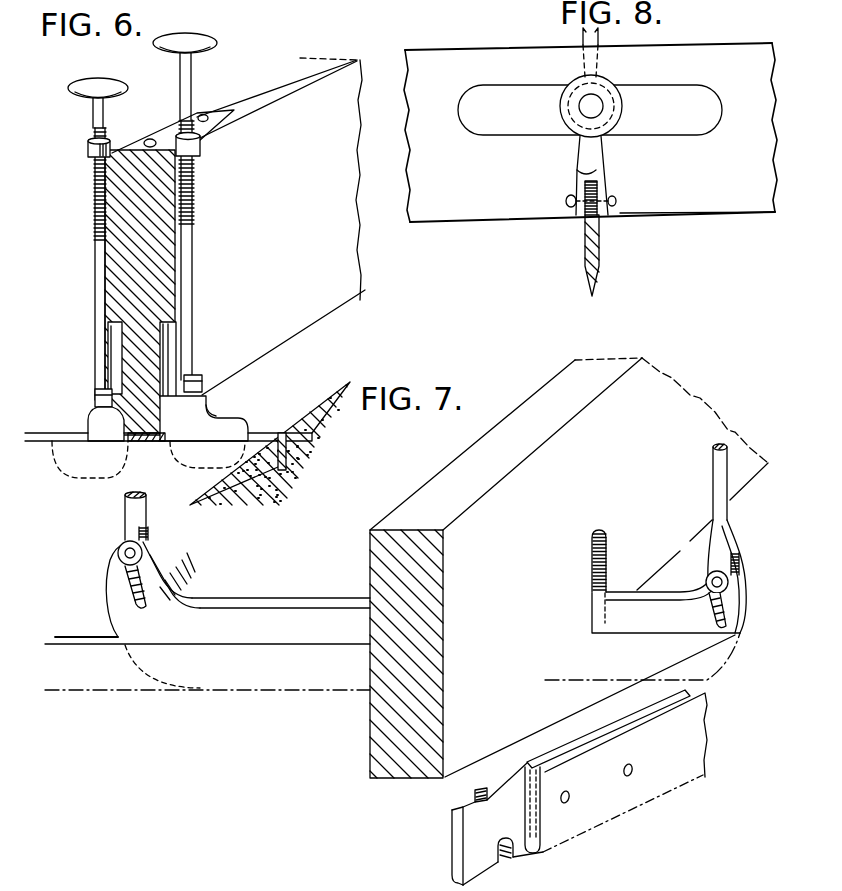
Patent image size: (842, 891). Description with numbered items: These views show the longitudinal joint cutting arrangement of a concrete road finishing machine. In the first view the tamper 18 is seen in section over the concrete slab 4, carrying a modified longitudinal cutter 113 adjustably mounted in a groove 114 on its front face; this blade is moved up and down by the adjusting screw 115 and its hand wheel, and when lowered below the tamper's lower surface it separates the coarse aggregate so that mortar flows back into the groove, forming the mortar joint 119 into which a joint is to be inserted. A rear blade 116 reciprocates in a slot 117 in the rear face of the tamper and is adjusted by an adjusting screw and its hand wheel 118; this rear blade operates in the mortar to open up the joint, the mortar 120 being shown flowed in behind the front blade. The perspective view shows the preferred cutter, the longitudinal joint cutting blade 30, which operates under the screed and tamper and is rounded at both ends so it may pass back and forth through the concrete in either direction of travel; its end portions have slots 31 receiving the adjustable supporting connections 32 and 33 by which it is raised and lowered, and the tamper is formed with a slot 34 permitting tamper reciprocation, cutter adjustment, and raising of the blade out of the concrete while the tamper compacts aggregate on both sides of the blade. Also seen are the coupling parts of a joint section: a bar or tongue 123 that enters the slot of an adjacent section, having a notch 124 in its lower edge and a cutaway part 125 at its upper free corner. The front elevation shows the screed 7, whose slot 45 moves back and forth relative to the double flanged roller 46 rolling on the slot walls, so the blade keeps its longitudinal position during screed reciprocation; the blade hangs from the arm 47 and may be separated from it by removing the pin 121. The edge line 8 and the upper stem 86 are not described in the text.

In FIG. 6, the tamper 18 is at (270, 85).
In FIG. 7, the tamper 18 is at (537, 402).
In FIG. 6, the hand wheel 118 is at (95, 196).
In FIG. 6, the adjusting screw 115 is at (197, 196).
In FIG. 6, the slot 117 is at (108, 330).
In FIG. 6, the groove 114 is at (182, 334).
In FIG. 6, the rear blade 116 is at (90, 418).
In FIG. 6, the longitudinal cutter 113 is at (226, 426).
In FIG. 6, the mortar joint 119 is at (281, 433).
In FIG. 6, the concrete slab 4 is at (187, 443).
In FIG. 7, the concrete slab 4 is at (114, 672).
In FIG. 6, the mortar 120 is at (153, 443).
In FIG. 7, the adjustable supporting connection 32 is at (126, 505).
In FIG. 7, the slot 31 is at (140, 578).
In FIG. 8, the longitudinal joint cutting blade 30 is at (584, 273).
In FIG. 7, the longitudinal joint cutting blade 30 is at (244, 610).
In FIG. 7, the adjustable supporting connection 33 is at (722, 488).
In FIG. 7, the slot 34 is at (607, 562).
In FIG. 7, the cutaway part 125 is at (466, 806).
In FIG. 7, the bar or tongue 123 is at (468, 834).
In FIG. 7, the notch 124 is at (512, 862).
In FIG. 8, the stem 86 is at (583, 37).
In FIG. 8, the double flanged roller 46 is at (560, 106).
In FIG. 8, the slot 45 is at (668, 128).
In FIG. 8, the arm 47 is at (592, 156).
In FIG. 8, the pin 121 is at (566, 201).
In FIG. 8, the plate edge 8 is at (680, 210).
In FIG. 8, the screed 7 is at (748, 214).